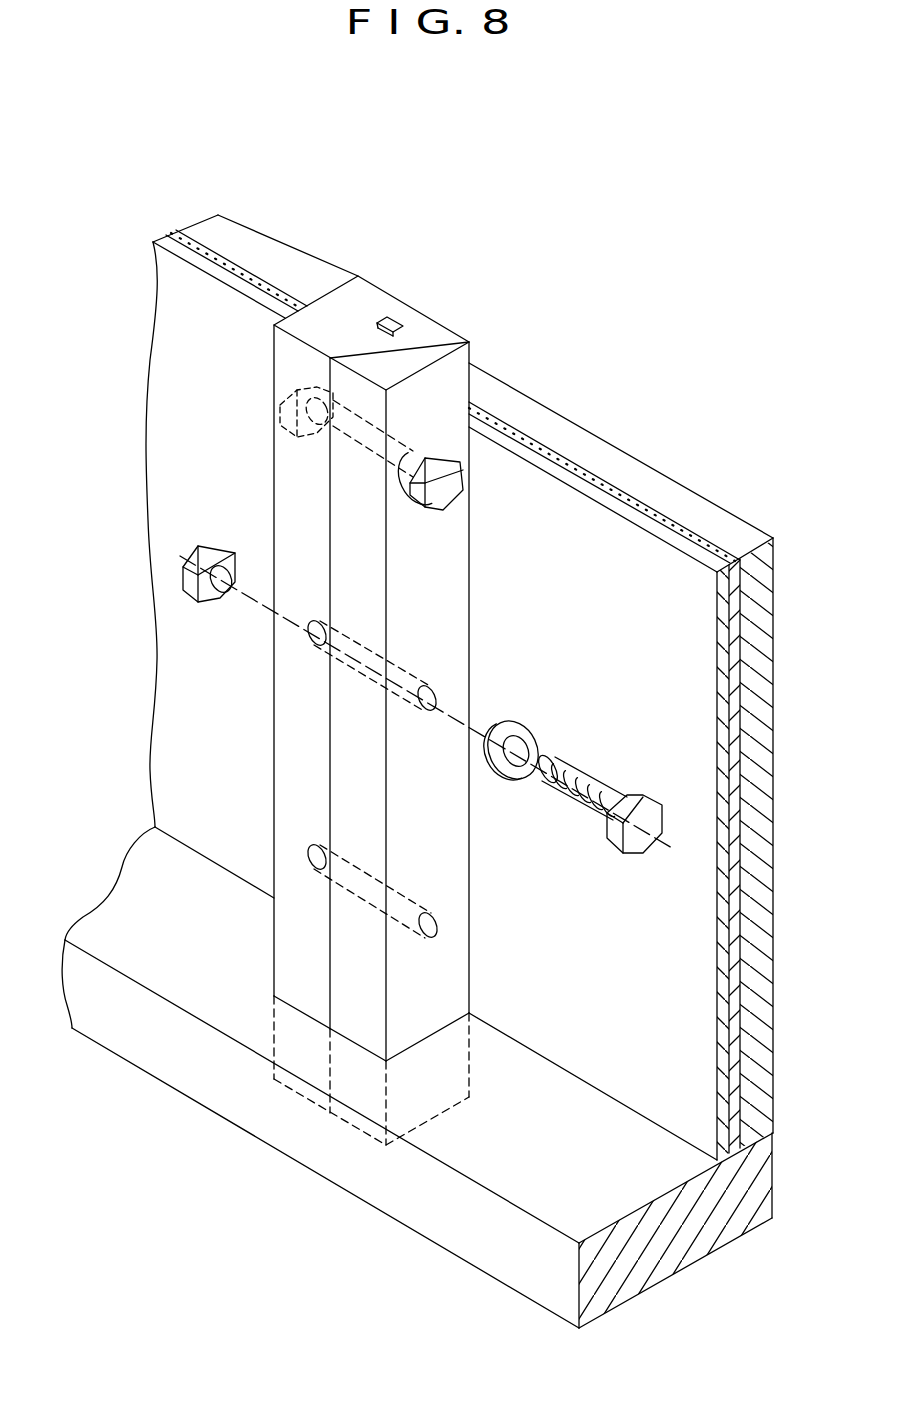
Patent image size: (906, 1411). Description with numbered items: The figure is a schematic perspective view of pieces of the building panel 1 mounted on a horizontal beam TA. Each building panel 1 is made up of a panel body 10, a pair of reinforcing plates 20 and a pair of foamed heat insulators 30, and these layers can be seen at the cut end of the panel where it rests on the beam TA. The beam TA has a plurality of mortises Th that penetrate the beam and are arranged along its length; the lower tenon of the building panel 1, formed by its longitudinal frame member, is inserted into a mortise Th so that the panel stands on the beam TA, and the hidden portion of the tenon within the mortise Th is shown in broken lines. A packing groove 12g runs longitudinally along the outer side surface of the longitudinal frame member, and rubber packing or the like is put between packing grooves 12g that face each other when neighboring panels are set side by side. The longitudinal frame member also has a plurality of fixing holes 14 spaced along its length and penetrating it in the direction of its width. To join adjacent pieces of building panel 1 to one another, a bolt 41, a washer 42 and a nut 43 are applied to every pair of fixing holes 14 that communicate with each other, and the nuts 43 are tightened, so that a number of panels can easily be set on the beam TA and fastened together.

The building panel 1 is at (464, 617).
The panel body 10 is at (580, 440).
The reinforcing plate 20 is at (640, 520).
The foamed heat insulator 30 is at (704, 540).
The packing groove 12g is at (390, 320).
The fixing hole 14 is at (440, 697).
The bolt 41 is at (440, 497).
The washer 42 is at (532, 733).
The nut 43 is at (220, 553).
The beam TA is at (167, 1050).
The mortise Th is at (383, 1097).